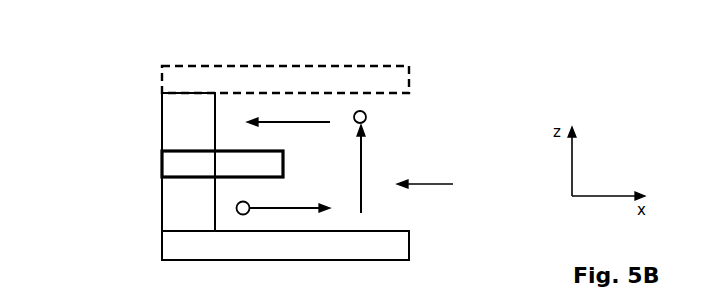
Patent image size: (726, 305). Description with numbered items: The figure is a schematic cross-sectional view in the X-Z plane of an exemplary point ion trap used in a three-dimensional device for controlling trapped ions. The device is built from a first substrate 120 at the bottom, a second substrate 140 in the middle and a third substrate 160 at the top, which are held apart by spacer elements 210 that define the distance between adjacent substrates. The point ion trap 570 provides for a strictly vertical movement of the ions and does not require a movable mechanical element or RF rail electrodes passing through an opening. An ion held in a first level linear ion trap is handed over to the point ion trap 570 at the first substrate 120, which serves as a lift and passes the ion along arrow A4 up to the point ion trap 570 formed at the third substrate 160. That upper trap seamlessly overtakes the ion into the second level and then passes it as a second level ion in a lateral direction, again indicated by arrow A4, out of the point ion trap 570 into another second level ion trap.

The third substrate 160 is at (410, 80).
The spacer element 210 is at (176, 122).
The second substrate 140 is at (170, 164).
The first substrate 120 is at (402, 245).
The point ion trap 570 is at (408, 184).
The arrow A4 is at (279, 122).